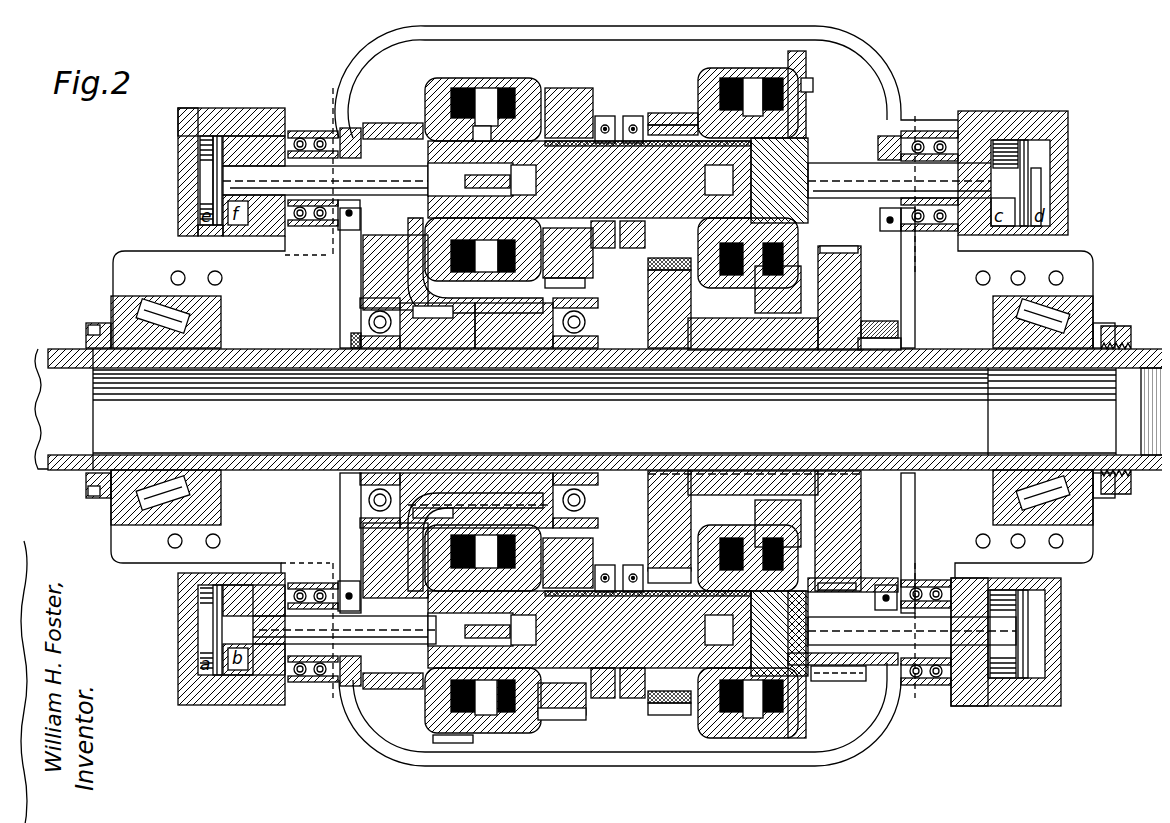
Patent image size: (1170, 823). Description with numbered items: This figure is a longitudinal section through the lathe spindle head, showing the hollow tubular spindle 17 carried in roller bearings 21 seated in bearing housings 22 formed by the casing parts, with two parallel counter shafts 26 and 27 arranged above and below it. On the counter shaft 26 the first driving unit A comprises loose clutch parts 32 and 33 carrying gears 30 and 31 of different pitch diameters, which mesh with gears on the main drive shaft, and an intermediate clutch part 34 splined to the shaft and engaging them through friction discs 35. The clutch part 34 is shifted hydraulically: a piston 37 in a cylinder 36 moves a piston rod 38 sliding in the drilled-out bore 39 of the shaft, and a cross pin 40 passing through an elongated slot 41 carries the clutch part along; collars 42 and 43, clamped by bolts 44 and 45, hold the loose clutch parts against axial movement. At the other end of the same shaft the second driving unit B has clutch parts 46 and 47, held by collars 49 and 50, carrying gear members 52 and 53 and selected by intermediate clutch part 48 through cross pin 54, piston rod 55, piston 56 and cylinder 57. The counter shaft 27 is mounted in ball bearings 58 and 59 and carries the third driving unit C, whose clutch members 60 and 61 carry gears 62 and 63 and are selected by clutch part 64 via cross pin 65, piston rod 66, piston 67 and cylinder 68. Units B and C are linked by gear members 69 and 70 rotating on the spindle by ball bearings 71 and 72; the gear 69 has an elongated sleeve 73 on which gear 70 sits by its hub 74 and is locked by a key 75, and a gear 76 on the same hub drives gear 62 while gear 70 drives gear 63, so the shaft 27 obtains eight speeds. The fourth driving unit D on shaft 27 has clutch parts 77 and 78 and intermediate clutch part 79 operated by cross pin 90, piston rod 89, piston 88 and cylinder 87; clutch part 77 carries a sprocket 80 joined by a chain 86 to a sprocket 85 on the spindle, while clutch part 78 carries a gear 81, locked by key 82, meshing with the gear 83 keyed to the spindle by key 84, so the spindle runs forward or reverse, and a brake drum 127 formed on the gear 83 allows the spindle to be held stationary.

The spindle 17 is at (1120, 345).
The roller bearings 21 is at (152, 490).
The bearing housings 22 is at (143, 268).
The counter shaft 26 is at (598, 160).
The counter shaft 27 is at (632, 640).
The gear 30 is at (655, 105).
The gear 31 is at (798, 52).
The clutch part 32 is at (708, 68).
The clutch part 33 is at (806, 78).
The intermediate clutch part 34 is at (762, 70).
The friction discs 35 is at (722, 62).
The cylinder 36 is at (997, 132).
The piston 37 is at (1018, 132).
The piston rod 38 is at (958, 160).
The drilled-out bore 39 is at (845, 155).
The cross pin 40 is at (719, 180).
The elongated slot 41 is at (668, 117).
The collar 42 is at (629, 118).
The collar 43 is at (880, 128).
The clamping bolt 44 is at (626, 108).
The clamping bolt 45 is at (881, 223).
The clutch part 46 is at (418, 90).
The clutch part 47 is at (512, 82).
The intermediate clutch part 48 is at (458, 80).
The collar 49 is at (345, 120).
The collar 50 is at (597, 108).
The gear member 52 is at (390, 115).
The gear member 53 is at (550, 80).
The cross pin 54 is at (510, 170).
The piston rod 55 is at (312, 158).
The piston 56 is at (212, 128).
The cylinder 57 is at (232, 128).
The ball bearing 58 is at (305, 676).
The ball bearing 59 is at (916, 678).
The clutch member 60 is at (432, 678).
The clutch member 61 is at (535, 712).
The gear 62 is at (445, 735).
The gear 63 is at (570, 707).
The intermediate clutch part 64 is at (498, 705).
The cross pin 65 is at (440, 704).
The piston rod 66 is at (375, 636).
The piston 67 is at (205, 697).
The cylinder 68 is at (235, 697).
The gear member 69 is at (378, 258).
The gear member 70 is at (585, 278).
The ball bearing 71 is at (361, 314).
The ball bearing 72 is at (578, 314).
The sleeve or hub part 73 is at (470, 340).
The hub 74 is at (505, 340).
The key 75 is at (490, 500).
The gear 76 is at (440, 310).
The clutch part 77 is at (695, 730).
The clutch part 78 is at (795, 705).
The intermediate clutch part 79 is at (762, 705).
The sprocket 80 is at (642, 560).
The gear 81 is at (858, 583).
The key 82 is at (845, 673).
The gear 83 is at (840, 272).
The key 84 is at (780, 464).
The sprocket 85 is at (663, 500).
The chain 86 is at (640, 256).
The cylinder 87 is at (1022, 698).
The piston 88 is at (1000, 698).
The piston rod 89 is at (965, 698).
The cross pin 90 is at (719, 630).
The brake drum 127 is at (878, 302).
The driving unit A is at (852, 62).
The driving unit B is at (378, 52).
The driving unit C is at (405, 735).
The driving unit D is at (808, 735).